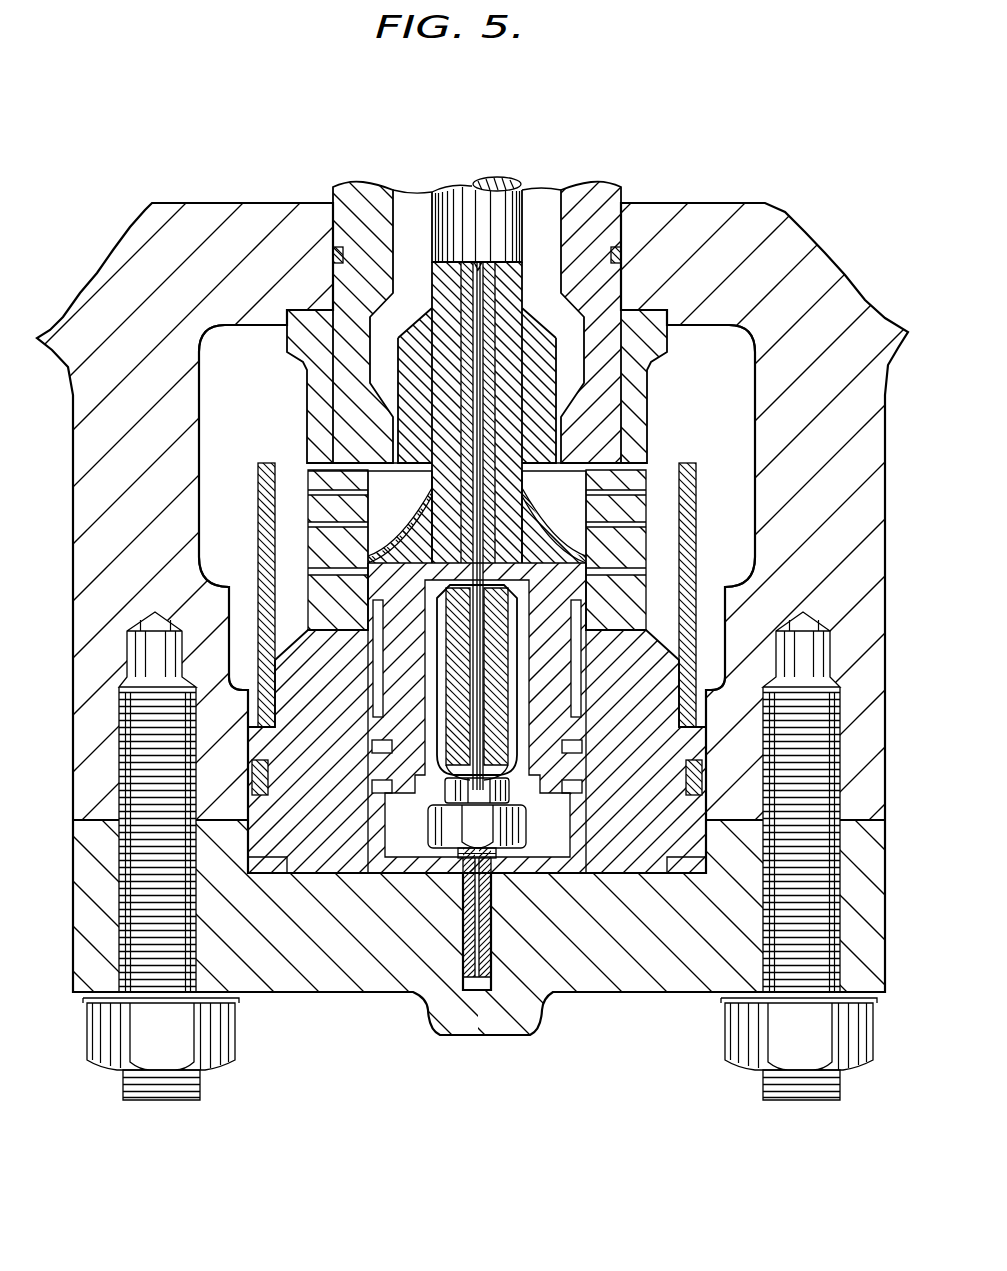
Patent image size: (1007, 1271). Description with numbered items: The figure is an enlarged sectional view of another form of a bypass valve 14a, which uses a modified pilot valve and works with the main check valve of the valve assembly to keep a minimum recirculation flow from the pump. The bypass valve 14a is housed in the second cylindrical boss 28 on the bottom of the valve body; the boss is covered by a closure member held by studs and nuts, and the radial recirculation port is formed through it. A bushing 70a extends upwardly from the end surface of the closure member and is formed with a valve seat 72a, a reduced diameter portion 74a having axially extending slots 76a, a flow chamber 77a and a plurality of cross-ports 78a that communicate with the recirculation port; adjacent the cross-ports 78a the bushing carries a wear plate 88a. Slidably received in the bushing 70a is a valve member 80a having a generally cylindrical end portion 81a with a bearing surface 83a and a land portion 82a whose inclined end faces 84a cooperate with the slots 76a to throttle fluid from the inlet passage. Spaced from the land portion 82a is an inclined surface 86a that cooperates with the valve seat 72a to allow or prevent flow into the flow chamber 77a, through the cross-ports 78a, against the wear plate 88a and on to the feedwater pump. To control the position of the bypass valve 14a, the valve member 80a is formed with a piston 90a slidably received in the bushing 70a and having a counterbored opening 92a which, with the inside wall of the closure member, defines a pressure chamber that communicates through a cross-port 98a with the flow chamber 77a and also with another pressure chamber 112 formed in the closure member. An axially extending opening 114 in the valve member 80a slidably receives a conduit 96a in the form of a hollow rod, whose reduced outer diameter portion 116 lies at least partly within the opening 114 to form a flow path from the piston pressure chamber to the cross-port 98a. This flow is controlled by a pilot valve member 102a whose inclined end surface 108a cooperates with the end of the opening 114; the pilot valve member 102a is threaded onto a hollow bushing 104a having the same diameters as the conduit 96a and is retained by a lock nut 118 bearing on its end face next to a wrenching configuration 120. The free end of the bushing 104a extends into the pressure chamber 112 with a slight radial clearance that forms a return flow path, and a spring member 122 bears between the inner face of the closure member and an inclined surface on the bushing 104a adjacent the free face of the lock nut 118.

The second cylindrical boss 28 is at (875, 409).
The bushing 70a is at (637, 409).
The reduced diameter portion 74a is at (368, 220).
The axially extending slots 76a is at (404, 260).
The land portion 82a is at (400, 354).
The bearing surface 83a is at (463, 262).
The inclined end faces 84a is at (527, 312).
The cylindrical end portion 81a is at (440, 298).
The reduced outer diameter portion 116 is at (487, 548).
The axially extending opening 114 is at (487, 600).
The valve seat 72a is at (556, 460).
The flow chamber 77a is at (578, 491).
The cross-port 98a is at (560, 560).
The inclined surface 86a is at (397, 528).
The bypass valve 14a is at (370, 481).
The wear plate 88a is at (700, 528).
The cross-ports 78a is at (317, 531).
The piston 90a is at (583, 719).
The inclined end surface 108a is at (443, 618).
The valve member 80a is at (563, 615).
The counterbored opening 92a is at (567, 758).
The conduit 96a is at (440, 613).
The hollow bushing 104a is at (457, 713).
The pilot valve member 102a is at (520, 682).
The wrenching configuration 120 is at (453, 790).
The lock nut 118 is at (437, 835).
The spring member 122 is at (500, 862).
The pressure chamber 112 is at (470, 988).